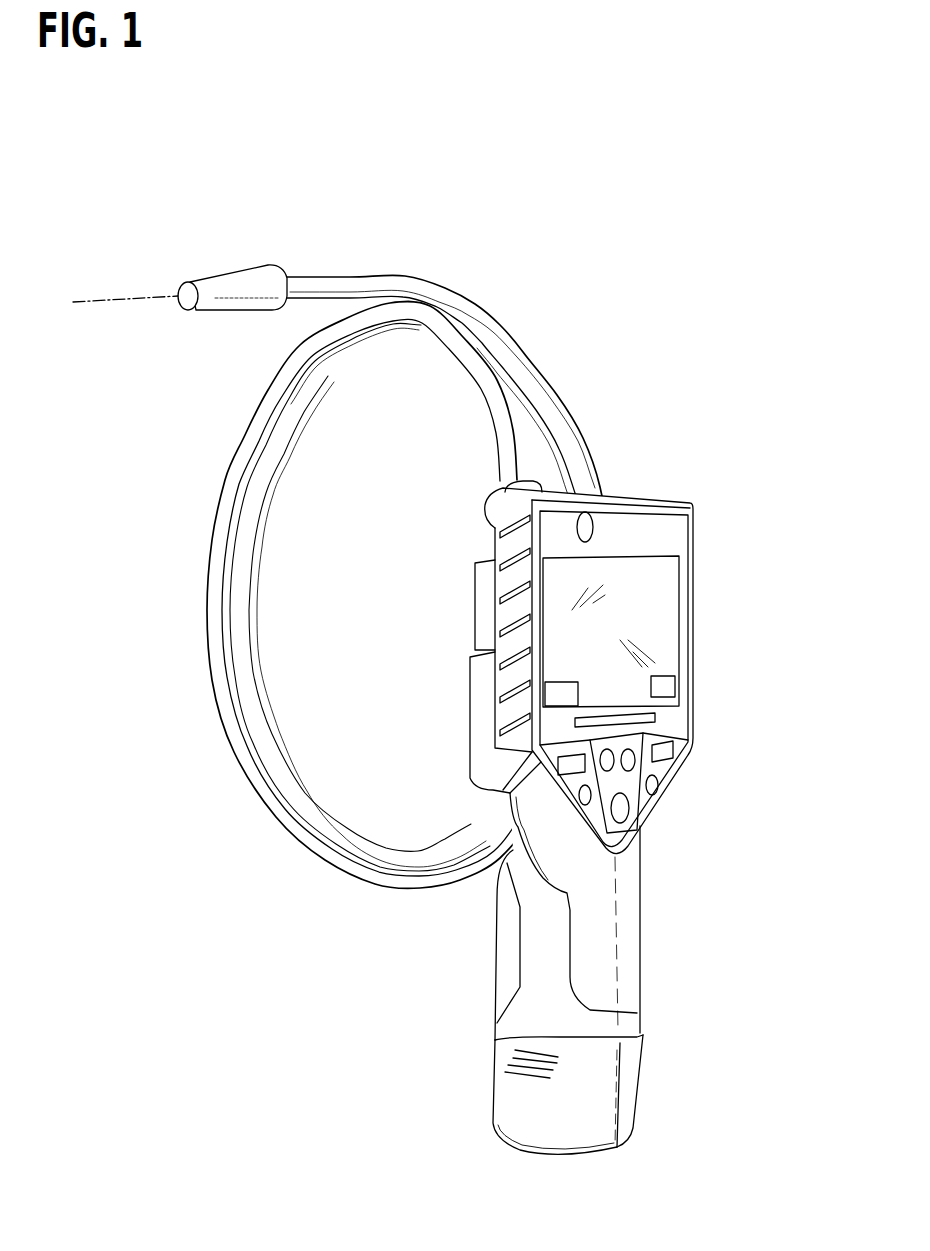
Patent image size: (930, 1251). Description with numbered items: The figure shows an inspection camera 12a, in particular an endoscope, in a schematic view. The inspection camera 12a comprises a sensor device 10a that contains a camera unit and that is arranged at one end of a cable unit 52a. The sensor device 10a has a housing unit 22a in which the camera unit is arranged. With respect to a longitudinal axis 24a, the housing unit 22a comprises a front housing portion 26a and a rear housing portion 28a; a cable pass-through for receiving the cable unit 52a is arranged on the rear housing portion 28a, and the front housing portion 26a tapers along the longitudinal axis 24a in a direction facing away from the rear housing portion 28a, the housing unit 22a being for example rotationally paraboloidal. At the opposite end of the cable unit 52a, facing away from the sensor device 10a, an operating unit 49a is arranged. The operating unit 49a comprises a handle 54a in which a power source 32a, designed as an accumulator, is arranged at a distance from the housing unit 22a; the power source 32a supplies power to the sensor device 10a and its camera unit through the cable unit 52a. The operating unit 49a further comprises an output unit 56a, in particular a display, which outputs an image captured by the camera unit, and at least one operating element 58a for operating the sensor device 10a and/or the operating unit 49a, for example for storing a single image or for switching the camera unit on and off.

The sensor device 10a is at (175, 272).
The inspection camera 12a is at (693, 705).
The housing unit 22a is at (215, 287).
The longitudinal axis 24a is at (93, 303).
The front housing portion 26a is at (185, 302).
The rear housing portion 28a is at (280, 287).
The power source 32a is at (608, 1072).
The operating unit 49a is at (633, 492).
The cable unit 52a is at (487, 327).
The handle 54a is at (607, 935).
The output unit 56a is at (625, 603).
The operating element 58a is at (623, 808).